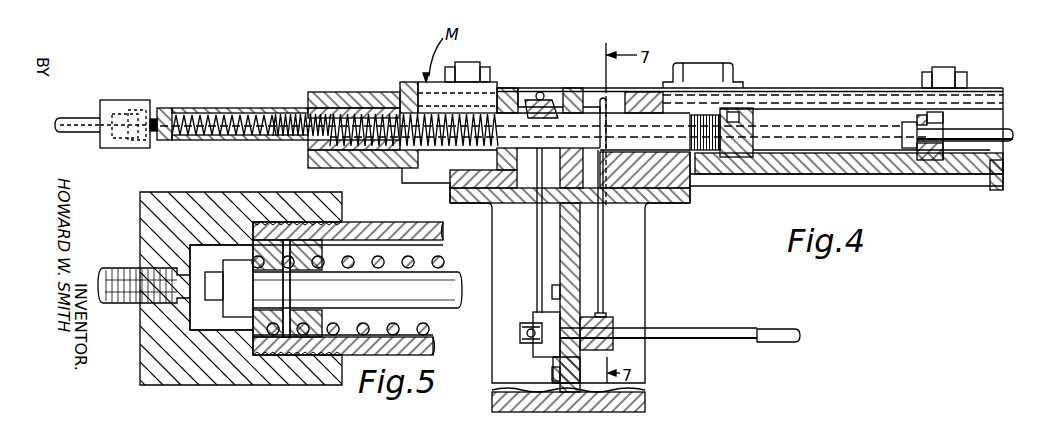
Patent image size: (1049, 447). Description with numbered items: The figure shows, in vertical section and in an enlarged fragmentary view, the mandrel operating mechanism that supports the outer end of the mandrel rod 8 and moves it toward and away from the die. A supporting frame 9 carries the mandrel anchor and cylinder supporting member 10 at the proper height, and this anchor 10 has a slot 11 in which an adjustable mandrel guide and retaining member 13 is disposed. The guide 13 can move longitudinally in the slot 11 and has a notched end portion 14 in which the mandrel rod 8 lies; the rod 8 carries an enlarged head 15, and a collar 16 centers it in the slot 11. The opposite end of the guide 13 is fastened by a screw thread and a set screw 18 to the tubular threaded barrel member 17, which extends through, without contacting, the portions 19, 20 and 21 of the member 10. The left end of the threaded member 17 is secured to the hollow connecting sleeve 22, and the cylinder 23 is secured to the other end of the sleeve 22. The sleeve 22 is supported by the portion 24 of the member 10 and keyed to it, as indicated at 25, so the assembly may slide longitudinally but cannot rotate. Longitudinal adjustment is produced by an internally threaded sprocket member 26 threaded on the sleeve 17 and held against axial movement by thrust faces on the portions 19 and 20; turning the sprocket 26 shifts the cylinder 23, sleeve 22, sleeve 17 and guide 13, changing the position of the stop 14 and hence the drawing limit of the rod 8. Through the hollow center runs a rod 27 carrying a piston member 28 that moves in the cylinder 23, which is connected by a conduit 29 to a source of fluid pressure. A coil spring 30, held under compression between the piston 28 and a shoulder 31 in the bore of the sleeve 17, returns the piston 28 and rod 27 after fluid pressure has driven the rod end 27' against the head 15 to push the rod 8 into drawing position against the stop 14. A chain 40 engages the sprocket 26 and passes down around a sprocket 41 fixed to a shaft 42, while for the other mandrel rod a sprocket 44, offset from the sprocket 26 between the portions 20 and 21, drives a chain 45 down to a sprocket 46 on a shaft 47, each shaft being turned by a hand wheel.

In FIG. 4, the mandrel rod 8 is at (1013, 134).
In FIG. 4, the supporting frame 9 is at (633, 270).
In FIG. 4, the mandrel anchor and cylinder supporting member 10 is at (770, 164).
In FIG. 4, the slot 11 is at (991, 152).
In FIG. 4, the adjustable mandrel guide and retaining member 13 is at (922, 172).
In FIG. 4, the notched end portion 14 is at (942, 112).
In FIG. 4, the enlarged head 15 is at (902, 133).
In FIG. 4, the collar 16 is at (917, 115).
In FIG. 4, the tubular threaded barrel member 17 is at (680, 120).
In FIG. 4, the set screw 18 is at (738, 107).
In FIG. 4, the portion of the mandrel anchor and cylinder support member 19 is at (504, 88).
In FIG. 4, the portion of the mandrel anchor and cylinder support member 20 is at (576, 88).
In FIG. 4, the portion of the mandrel anchor and cylinder support member 21 is at (645, 84).
In FIG. 4, the hollow connecting sleeve 22 is at (372, 106).
In FIG. 4, the cylinder 23 is at (180, 140).
In FIG. 5, the cylinder 23 is at (413, 213).
In FIG. 4, the portion of the member 24 is at (337, 92).
In FIG. 4, the key 25 is at (310, 162).
In FIG. 4, the internally threaded sprocket member 26 is at (541, 94).
In FIG. 4, the rod 27 is at (530, 139).
In FIG. 5, the rod 27 is at (371, 290).
In FIG. 4, the end of the rod 27' is at (666, 122).
In FIG. 5, the piston member 28 is at (268, 250).
In FIG. 4, the conduit 29 is at (76, 118).
In FIG. 5, the conduit 29 is at (109, 274).
In FIG. 4, the coil spring 30 is at (215, 108).
In FIG. 5, the coil spring 30 is at (425, 326).
In FIG. 4, the shoulder 31 is at (562, 297).
In FIG. 4, the chain 40 is at (536, 249).
In FIG. 4, the sprocket 41 is at (530, 346).
In FIG. 4, the shaft 42 is at (772, 333).
In FIG. 4, the sprocket 44 is at (603, 98).
In FIG. 4, the chain 45 is at (604, 249).
In FIG. 4, the sprocket 46 is at (606, 318).
In FIG. 4, the shaft 47 is at (705, 338).